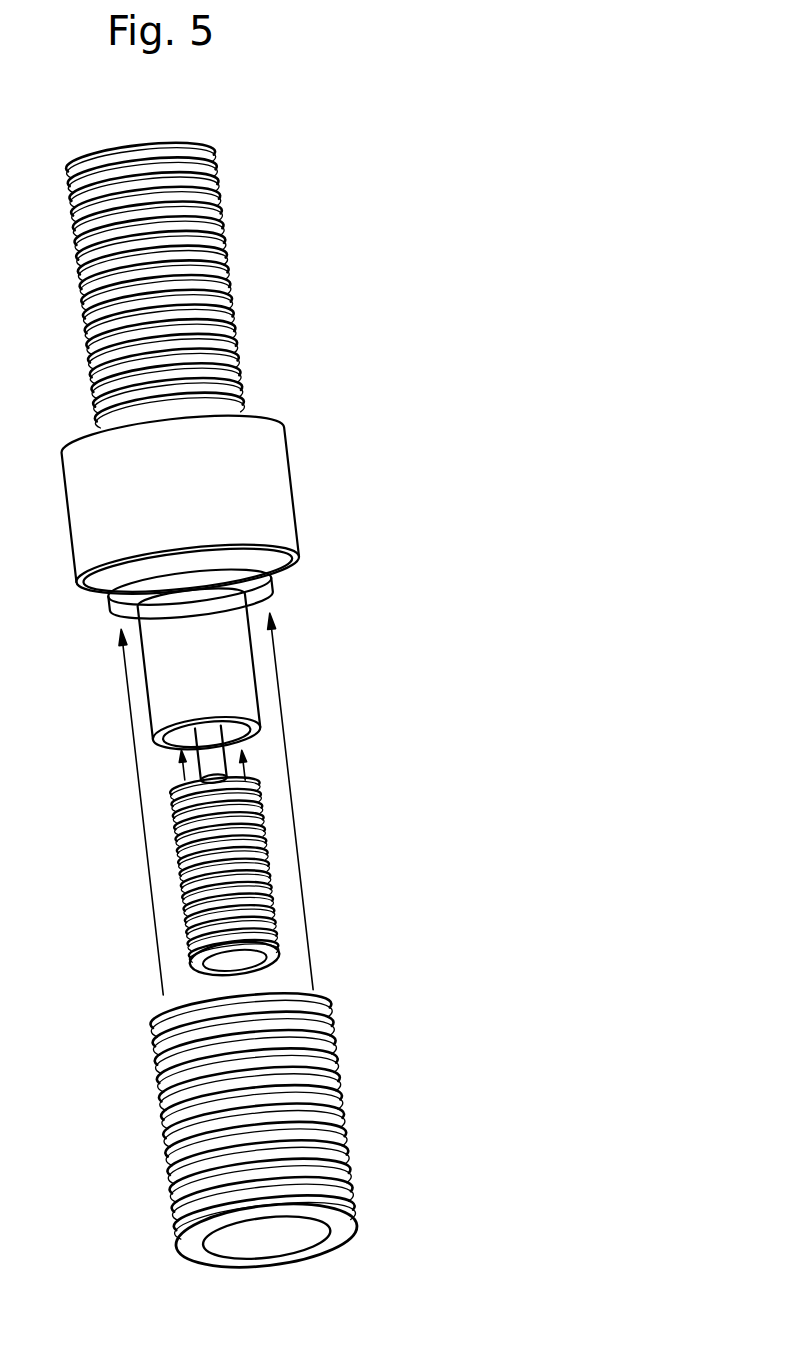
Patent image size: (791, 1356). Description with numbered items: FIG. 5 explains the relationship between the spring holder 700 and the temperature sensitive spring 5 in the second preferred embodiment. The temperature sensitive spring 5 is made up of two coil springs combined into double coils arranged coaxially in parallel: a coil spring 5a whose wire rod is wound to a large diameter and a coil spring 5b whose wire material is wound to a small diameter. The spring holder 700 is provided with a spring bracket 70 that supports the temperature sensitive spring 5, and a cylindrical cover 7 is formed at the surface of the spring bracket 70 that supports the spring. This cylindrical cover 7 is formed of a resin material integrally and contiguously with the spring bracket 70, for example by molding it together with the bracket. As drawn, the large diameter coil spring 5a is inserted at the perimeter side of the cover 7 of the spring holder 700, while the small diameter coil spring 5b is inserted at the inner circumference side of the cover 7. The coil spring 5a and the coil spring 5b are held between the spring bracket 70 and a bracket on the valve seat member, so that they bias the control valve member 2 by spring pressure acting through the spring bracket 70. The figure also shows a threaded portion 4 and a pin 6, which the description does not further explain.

The threaded portion of leg member 4 is at (228, 268).
The control valve member 2 is at (290, 477).
The spring bracket 70 is at (262, 590).
The spring holder 700 is at (290, 658).
The cylindrical cover 7 is at (376, 572).
The pin 6 is at (224, 768).
The small diameter coil spring 5b is at (268, 877).
The temperature sensitive spring 5 is at (318, 1025).
The large diameter coil spring 5a is at (286, 1118).